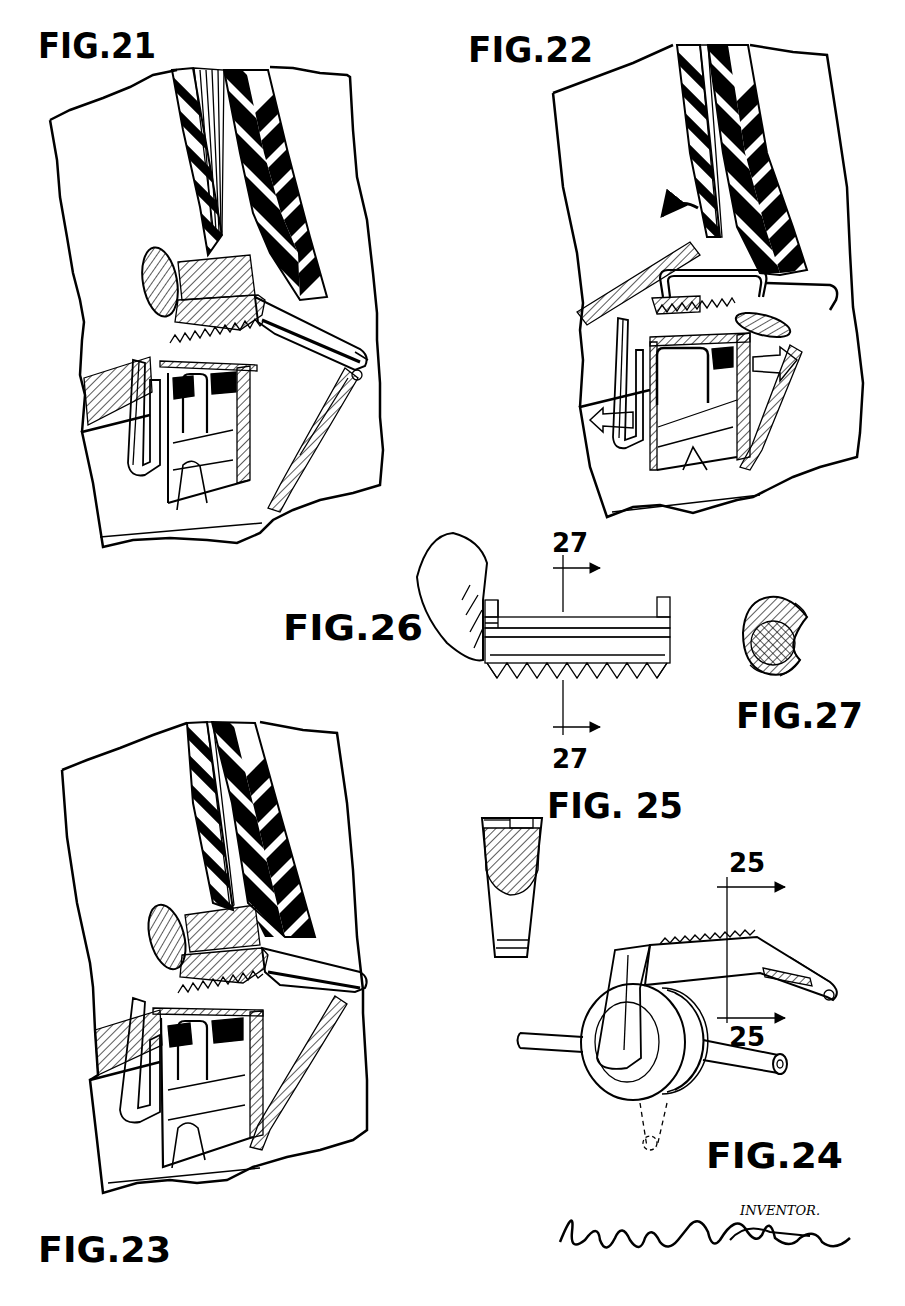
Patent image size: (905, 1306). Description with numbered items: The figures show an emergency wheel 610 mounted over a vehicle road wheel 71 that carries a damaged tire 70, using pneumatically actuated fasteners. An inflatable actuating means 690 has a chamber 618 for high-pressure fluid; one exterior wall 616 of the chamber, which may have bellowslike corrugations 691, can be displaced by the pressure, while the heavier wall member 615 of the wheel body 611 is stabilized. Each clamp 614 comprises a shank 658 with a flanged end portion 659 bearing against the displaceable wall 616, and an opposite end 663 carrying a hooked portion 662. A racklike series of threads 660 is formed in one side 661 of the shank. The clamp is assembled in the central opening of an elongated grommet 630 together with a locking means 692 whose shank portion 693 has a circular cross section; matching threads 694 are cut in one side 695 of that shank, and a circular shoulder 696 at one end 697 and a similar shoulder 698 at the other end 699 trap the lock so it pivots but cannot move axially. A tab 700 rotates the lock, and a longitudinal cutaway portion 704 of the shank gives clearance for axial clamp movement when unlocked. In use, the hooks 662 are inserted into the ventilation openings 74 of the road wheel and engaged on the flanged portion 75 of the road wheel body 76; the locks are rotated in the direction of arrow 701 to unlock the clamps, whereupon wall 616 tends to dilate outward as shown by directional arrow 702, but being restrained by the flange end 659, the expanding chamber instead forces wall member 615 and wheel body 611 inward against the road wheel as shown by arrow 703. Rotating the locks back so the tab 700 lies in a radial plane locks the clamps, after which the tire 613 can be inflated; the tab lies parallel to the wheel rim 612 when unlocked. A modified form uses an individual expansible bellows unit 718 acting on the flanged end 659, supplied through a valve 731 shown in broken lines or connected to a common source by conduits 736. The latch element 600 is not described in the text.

In FIG. 21, the damaged tire 70 is at (263, 68).
In FIG. 22, the damaged tire 70 is at (748, 45).
In FIG. 23, the damaged tire 70 is at (250, 720).
In FIG. 21, the vehicle road wheel 71 is at (384, 333).
In FIG. 22, the vehicle road wheel 71 is at (856, 308).
In FIG. 23, the vehicle road wheel 71 is at (371, 989).
In FIG. 21, the ventilation openings 74 is at (367, 355).
In FIG. 21, the flanged portion 75 is at (322, 378).
In FIG. 21, the road wheel body 76 is at (303, 443).
In FIG. 23, the latch lever 600 is at (222, 988).
In FIG. 21, the emergency wheel 610 is at (256, 501).
In FIG. 22, the emergency wheel 610 is at (576, 307).
In FIG. 23, the emergency wheel 610 is at (92, 1128).
In FIG. 21, the wheel body 611 is at (90, 375).
In FIG. 22, the wheel body 611 is at (770, 405).
In FIG. 22, the wheel rim 612 is at (667, 260).
In FIG. 21, the tire 613 is at (70, 265).
In FIG. 23, the tire 613 is at (83, 927).
In FIG. 21, the clamp 614 is at (140, 353).
In FIG. 22, the clamp 614 is at (613, 363).
In FIG. 23, the clamp 614 is at (117, 1020).
In FIG. 25, the clamp 614 is at (540, 877).
In FIG. 24, the clamp 614 is at (623, 957).
In FIG. 21, the wall member 615 is at (250, 410).
In FIG. 22, the wall member 615 is at (752, 420).
In FIG. 21, the exterior wall 616 is at (178, 500).
In FIG. 22, the exterior wall 616 is at (683, 460).
In FIG. 21, the chamber 618 is at (197, 447).
In FIG. 22, the chamber 618 is at (695, 440).
In FIG. 21, the grommet 630 is at (253, 368).
In FIG. 22, the grommet 630 is at (664, 286).
In FIG. 25, the shank 658 is at (484, 855).
In FIG. 24, the shank 658 is at (703, 953).
In FIG. 21, the flanged end portion 659 is at (150, 372).
In FIG. 22, the flanged end portion 659 is at (612, 392).
In FIG. 24, the flanged end portion 659 is at (603, 1007).
In FIG. 25, the threads 660 is at (520, 820).
In FIG. 24, the threads 660 is at (740, 938).
In FIG. 25, the side of shank 661 is at (497, 824).
In FIG. 24, the side of shank 661 is at (757, 940).
In FIG. 21, the hooked portion 662 is at (360, 379).
In FIG. 24, the hooked portion 662 is at (825, 999).
In FIG. 21, the opposite end 663 is at (367, 367).
In FIG. 24, the opposite end 663 is at (827, 970).
In FIG. 21, the inflatable actuating means 690 is at (112, 547).
In FIG. 21, the bellowslike corrugations 691 is at (208, 492).
In FIG. 21, the locking means 692 is at (140, 290).
In FIG. 22, the locking means 692 is at (676, 314).
In FIG. 23, the locking means 692 is at (167, 957).
In FIG. 26, the locking means 692 is at (450, 643).
In FIG. 27, the locking means 692 is at (777, 595).
In FIG. 26, the shank portion 693 is at (582, 625).
In FIG. 27, the shank portion 693 is at (807, 625).
In FIG. 23, the threads 694 is at (223, 977).
In FIG. 26, the threads 694 is at (540, 680).
In FIG. 27, the threads 694 is at (797, 672).
In FIG. 26, the side of shank 695 is at (497, 677).
In FIG. 27, the side of shank 695 is at (760, 673).
In FIG. 26, the circular shoulder 696 is at (663, 597).
In FIG. 27, the circular shoulder 696 is at (800, 603).
In FIG. 26, the end of shank 697 is at (655, 675).
In FIG. 26, the shoulder 698 is at (497, 600).
In FIG. 26, the other end of shank 699 is at (500, 618).
In FIG. 21, the tab 700 is at (155, 250).
In FIG. 22, the tab 700 is at (785, 312).
In FIG. 23, the tab 700 is at (147, 917).
In FIG. 26, the tab 700 is at (480, 545).
In FIG. 22, the arrow 701 is at (670, 208).
In FIG. 22, the directional arrow 702 is at (595, 437).
In FIG. 22, the directional arrow 703 is at (795, 380).
In FIG. 21, the cutaway portion 704 is at (232, 328).
In FIG. 27, the cutaway portion 704 is at (807, 652).
In FIG. 24, the expansible bellows unit 718 is at (590, 1077).
In FIG. 24, the valve 731 is at (634, 1117).
In FIG. 24, the conduits 736 is at (713, 1065).